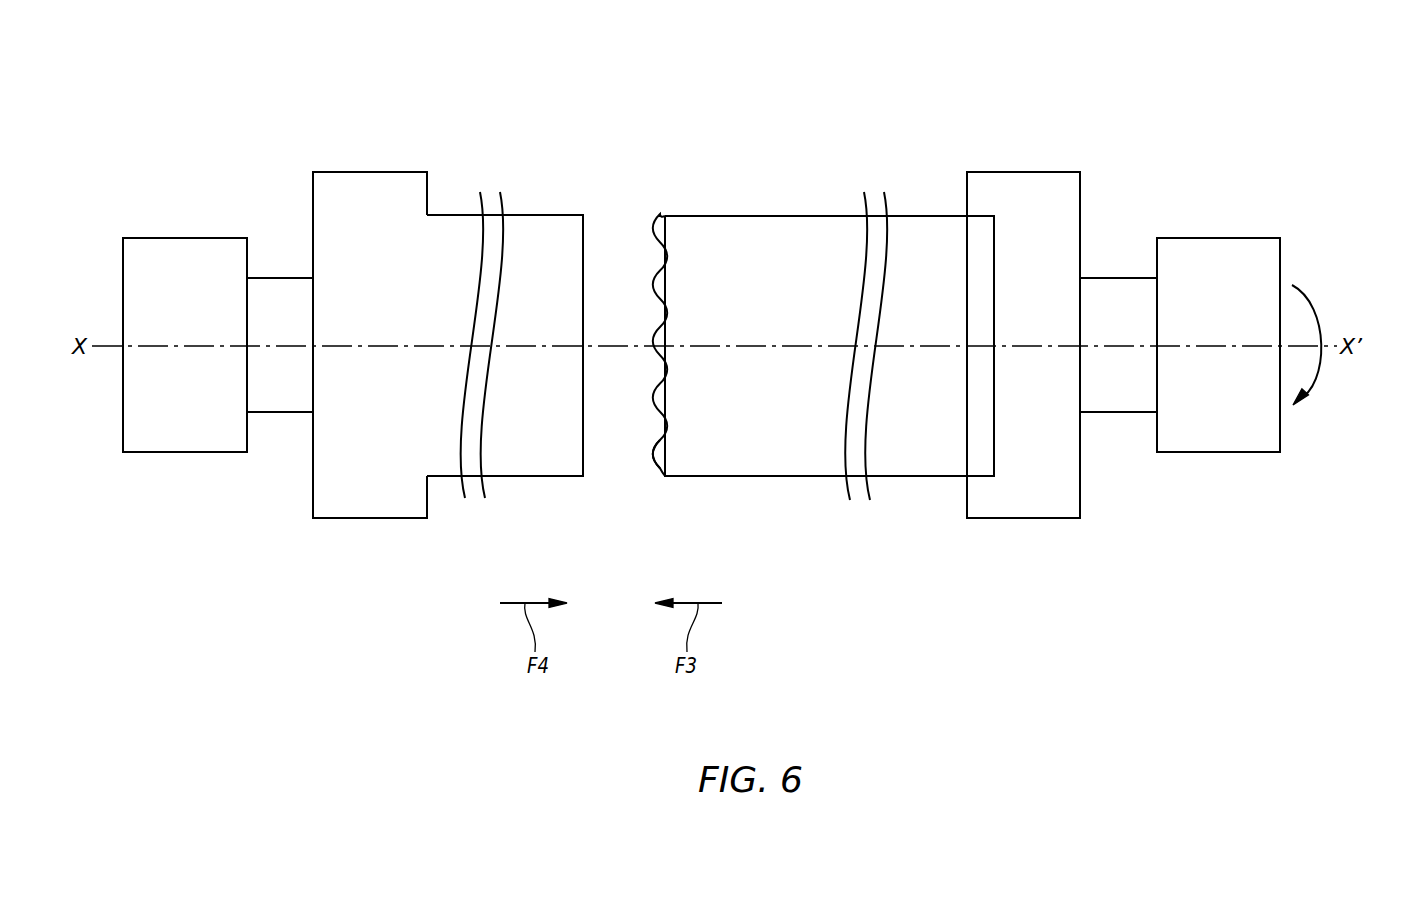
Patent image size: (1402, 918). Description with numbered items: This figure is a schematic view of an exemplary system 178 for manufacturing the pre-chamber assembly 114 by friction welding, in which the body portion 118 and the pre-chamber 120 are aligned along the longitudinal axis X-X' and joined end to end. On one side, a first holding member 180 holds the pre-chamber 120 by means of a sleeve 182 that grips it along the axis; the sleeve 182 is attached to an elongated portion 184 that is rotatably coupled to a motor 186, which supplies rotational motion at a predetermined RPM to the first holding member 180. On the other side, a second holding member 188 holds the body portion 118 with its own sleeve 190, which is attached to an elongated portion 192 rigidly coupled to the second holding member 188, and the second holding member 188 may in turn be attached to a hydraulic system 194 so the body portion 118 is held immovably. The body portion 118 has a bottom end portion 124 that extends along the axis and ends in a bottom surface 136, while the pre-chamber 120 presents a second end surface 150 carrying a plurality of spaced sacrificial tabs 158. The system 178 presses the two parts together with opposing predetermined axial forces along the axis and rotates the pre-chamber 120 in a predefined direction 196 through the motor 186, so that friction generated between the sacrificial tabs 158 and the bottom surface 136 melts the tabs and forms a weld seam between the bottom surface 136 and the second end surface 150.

The pre-chamber assembly 114 is at (806, 325).
The body portion 118 is at (523, 185).
The pre-chamber 120 is at (760, 183).
The bottom end portion 124 is at (512, 512).
The bottom surface 136 is at (583, 458).
The second end surface 150 is at (673, 458).
The sacrificial tabs 158 is at (648, 458).
The system 178 is at (499, 316).
The first holding member 180 is at (1123, 295).
The sleeve 182 is at (1023, 172).
The elongated portion 184 is at (1125, 278).
The motor 186 is at (1218, 238).
The second holding member 188 is at (275, 303).
The sleeve 190 is at (368, 172).
The elongated portion 192 is at (280, 278).
The hydraulic system 194 is at (155, 238).
The predefined direction 196 is at (1320, 310).